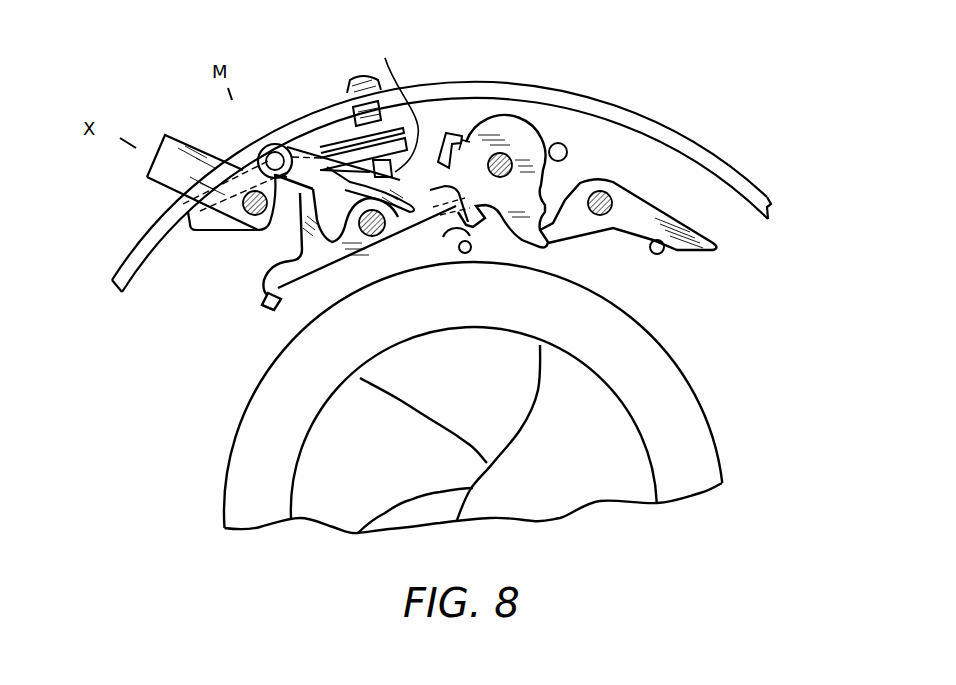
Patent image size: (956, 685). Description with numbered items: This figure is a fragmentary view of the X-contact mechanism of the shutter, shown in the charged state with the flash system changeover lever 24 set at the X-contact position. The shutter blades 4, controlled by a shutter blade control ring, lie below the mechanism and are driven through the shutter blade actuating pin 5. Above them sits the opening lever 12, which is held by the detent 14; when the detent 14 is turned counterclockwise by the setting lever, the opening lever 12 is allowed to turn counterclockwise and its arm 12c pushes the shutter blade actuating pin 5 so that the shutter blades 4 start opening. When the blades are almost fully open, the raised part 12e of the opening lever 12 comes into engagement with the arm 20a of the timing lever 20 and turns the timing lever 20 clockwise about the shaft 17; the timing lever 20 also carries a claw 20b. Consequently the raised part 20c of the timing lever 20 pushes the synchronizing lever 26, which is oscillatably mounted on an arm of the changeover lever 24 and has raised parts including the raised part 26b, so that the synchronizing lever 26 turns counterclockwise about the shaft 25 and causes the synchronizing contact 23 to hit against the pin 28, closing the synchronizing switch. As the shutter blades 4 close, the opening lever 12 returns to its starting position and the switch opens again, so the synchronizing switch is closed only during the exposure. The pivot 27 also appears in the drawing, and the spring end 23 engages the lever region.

The shutter blades 4 is at (482, 396).
The shutter blade actuating pin 5 is at (470, 246).
The opening lever 12 is at (522, 138).
The arm 12c is at (458, 233).
The raised part 12e is at (460, 140).
The detent 14 is at (628, 200).
The shaft 17 is at (372, 236).
The timing lever 20 is at (315, 257).
The arm 20a is at (430, 192).
The claw 20b is at (263, 306).
The raised part 20c is at (295, 195).
The synchronizing contact 23 is at (393, 112).
The flash system changeover lever 24 is at (167, 173).
The shaft 25 is at (270, 158).
The synchronizing lever 26 is at (330, 175).
The raised part 26b is at (438, 172).
The pivot 27 is at (245, 217).
The pin 28 is at (388, 70).